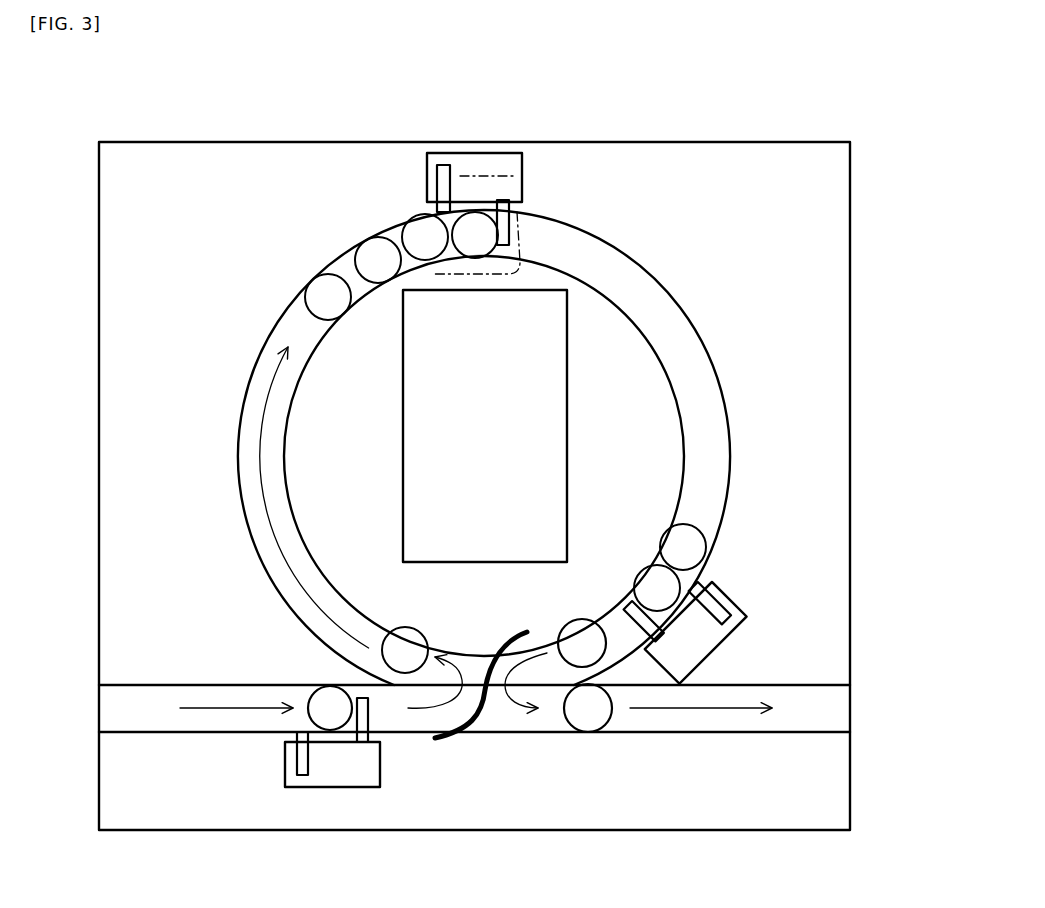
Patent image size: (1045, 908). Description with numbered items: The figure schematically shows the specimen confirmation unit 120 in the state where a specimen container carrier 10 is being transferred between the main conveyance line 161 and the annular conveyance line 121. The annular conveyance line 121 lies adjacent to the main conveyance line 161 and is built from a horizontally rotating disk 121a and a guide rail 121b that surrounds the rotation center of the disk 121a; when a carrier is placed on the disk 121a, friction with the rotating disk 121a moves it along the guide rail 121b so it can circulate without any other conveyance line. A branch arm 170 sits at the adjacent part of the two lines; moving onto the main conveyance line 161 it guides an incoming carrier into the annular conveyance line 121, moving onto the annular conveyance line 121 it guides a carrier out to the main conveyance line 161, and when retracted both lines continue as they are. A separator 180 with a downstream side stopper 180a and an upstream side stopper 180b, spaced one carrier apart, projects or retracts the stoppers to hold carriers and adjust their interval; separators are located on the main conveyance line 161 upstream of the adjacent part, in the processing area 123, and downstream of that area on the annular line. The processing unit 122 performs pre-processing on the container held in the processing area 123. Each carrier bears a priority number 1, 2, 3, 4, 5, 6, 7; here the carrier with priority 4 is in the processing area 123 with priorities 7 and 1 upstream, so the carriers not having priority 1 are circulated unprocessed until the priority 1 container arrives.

The specimen confirmation unit 120 is at (171, 140).
The annular conveyance line 121 is at (463, 447).
The disk 121a is at (263, 342).
The guide rail 121b is at (236, 463).
The processing unit 122 is at (423, 485).
The processing area 123 is at (524, 240).
The specimen container carrier 10 is at (728, 547).
The main conveyance line 161 is at (708, 733).
The branch arm 170 is at (509, 641).
The separator 180 is at (585, 490).
The downstream side stopper 180a is at (367, 742).
The upstream side stopper 180b is at (285, 763).
The priority number 1 is at (378, 260).
The priority number 2 is at (683, 547).
The priority number 3 is at (657, 588).
The priority number 4 is at (475, 235).
The priority number 5 is at (328, 297).
The priority number 6 is at (405, 650).
The priority number 7 is at (425, 237).